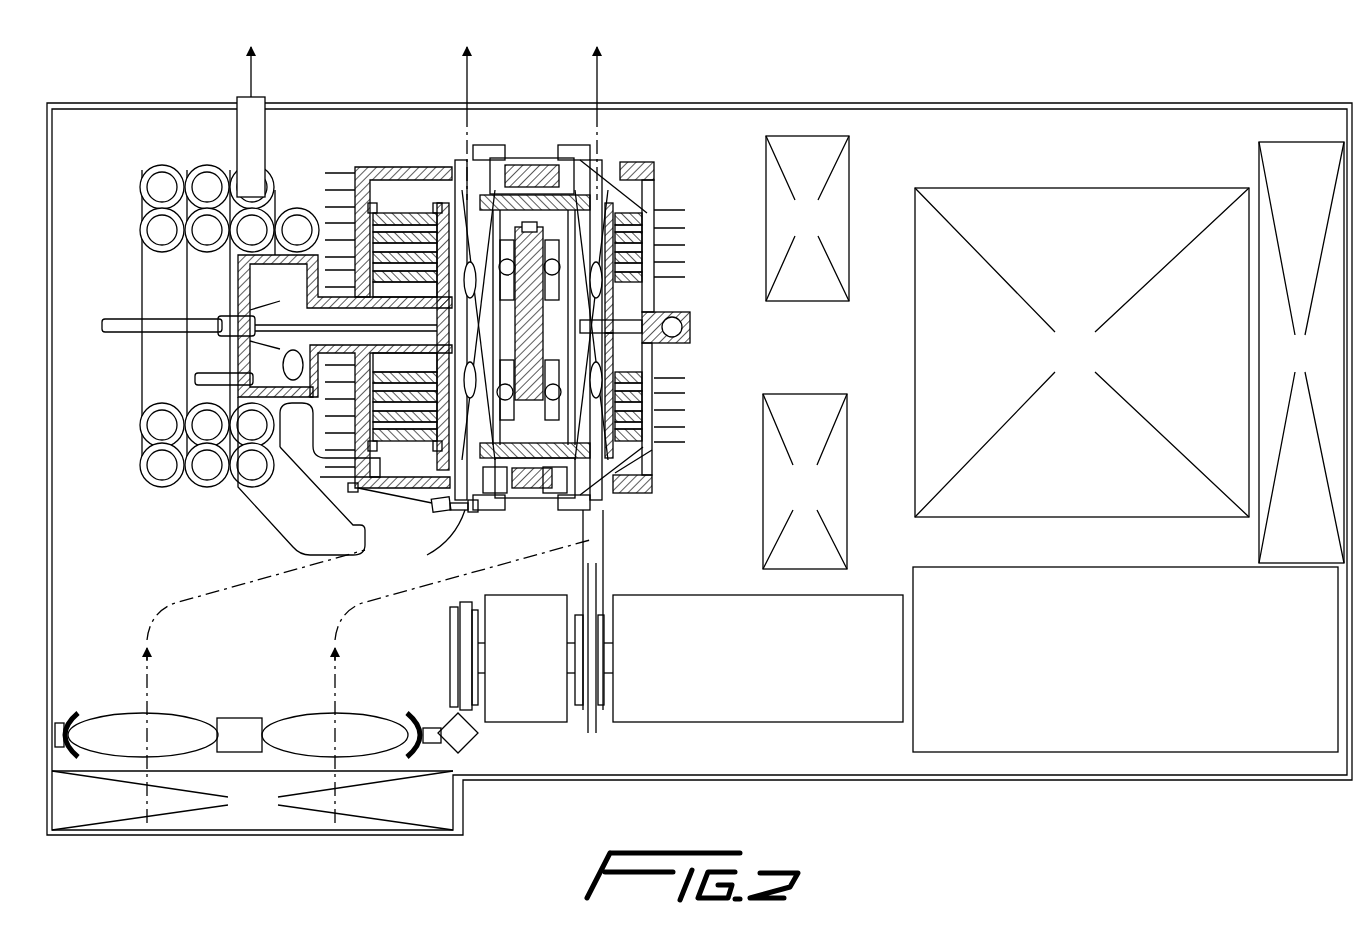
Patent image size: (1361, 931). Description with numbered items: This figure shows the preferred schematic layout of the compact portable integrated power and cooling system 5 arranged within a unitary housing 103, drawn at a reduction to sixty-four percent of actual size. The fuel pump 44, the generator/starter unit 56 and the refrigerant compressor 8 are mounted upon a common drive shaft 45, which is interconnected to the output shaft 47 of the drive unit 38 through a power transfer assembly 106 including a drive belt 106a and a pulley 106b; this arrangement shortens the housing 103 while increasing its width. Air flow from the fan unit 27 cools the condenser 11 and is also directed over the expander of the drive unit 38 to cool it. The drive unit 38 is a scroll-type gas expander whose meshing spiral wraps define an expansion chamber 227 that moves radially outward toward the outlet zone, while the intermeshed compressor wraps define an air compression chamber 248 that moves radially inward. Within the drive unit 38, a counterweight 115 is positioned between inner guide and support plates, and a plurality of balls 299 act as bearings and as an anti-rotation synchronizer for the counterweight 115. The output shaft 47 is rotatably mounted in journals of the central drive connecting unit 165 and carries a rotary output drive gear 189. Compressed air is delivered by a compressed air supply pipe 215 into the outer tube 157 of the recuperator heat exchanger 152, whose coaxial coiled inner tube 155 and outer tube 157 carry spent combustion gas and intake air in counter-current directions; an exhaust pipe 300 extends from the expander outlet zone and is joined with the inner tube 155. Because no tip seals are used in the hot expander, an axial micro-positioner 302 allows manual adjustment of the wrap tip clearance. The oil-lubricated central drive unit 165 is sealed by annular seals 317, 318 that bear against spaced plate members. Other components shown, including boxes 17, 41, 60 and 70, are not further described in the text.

The power and cooling system 5 is at (699, 437).
The refrigerant compressor 8 is at (1125, 659).
The condenser 11 is at (252, 800).
The heat exchanger 17 is at (1301, 352).
The fan unit 27 is at (248, 735).
The drive unit 38 is at (668, 180).
The heat exchanger 41 is at (1082, 352).
The fuel pump 44 is at (526, 658).
The common drive shaft 45 is at (470, 650).
The output shaft 47 is at (645, 343).
The generator/starter unit 56 is at (758, 658).
The heat exchanger 60 is at (807, 218).
The heat exchanger 70 is at (805, 481).
The housing 103 is at (1120, 782).
The power transfer assembly 106 is at (623, 637).
The drive belt 106a is at (600, 570).
The pulley 106b is at (567, 697).
The counterweight 115 is at (540, 160).
The recuperator heat exchanger 152 is at (197, 492).
The inner tube 155 is at (160, 235).
The outer tube 157 is at (140, 450).
The central drive connecting unit 165 is at (525, 503).
The rotary output drive gear 189 is at (658, 308).
The compressed air supply pipe 215 is at (277, 508).
The expansion chamber 227 is at (395, 227).
The air compression chamber 248 is at (655, 290).
The balls 299 is at (654, 241).
The exhaust pipe 300 is at (300, 468).
The axial micro-positioner 302 is at (420, 503).
The annular seal 317 is at (450, 160).
The annular seal 318 is at (615, 160).